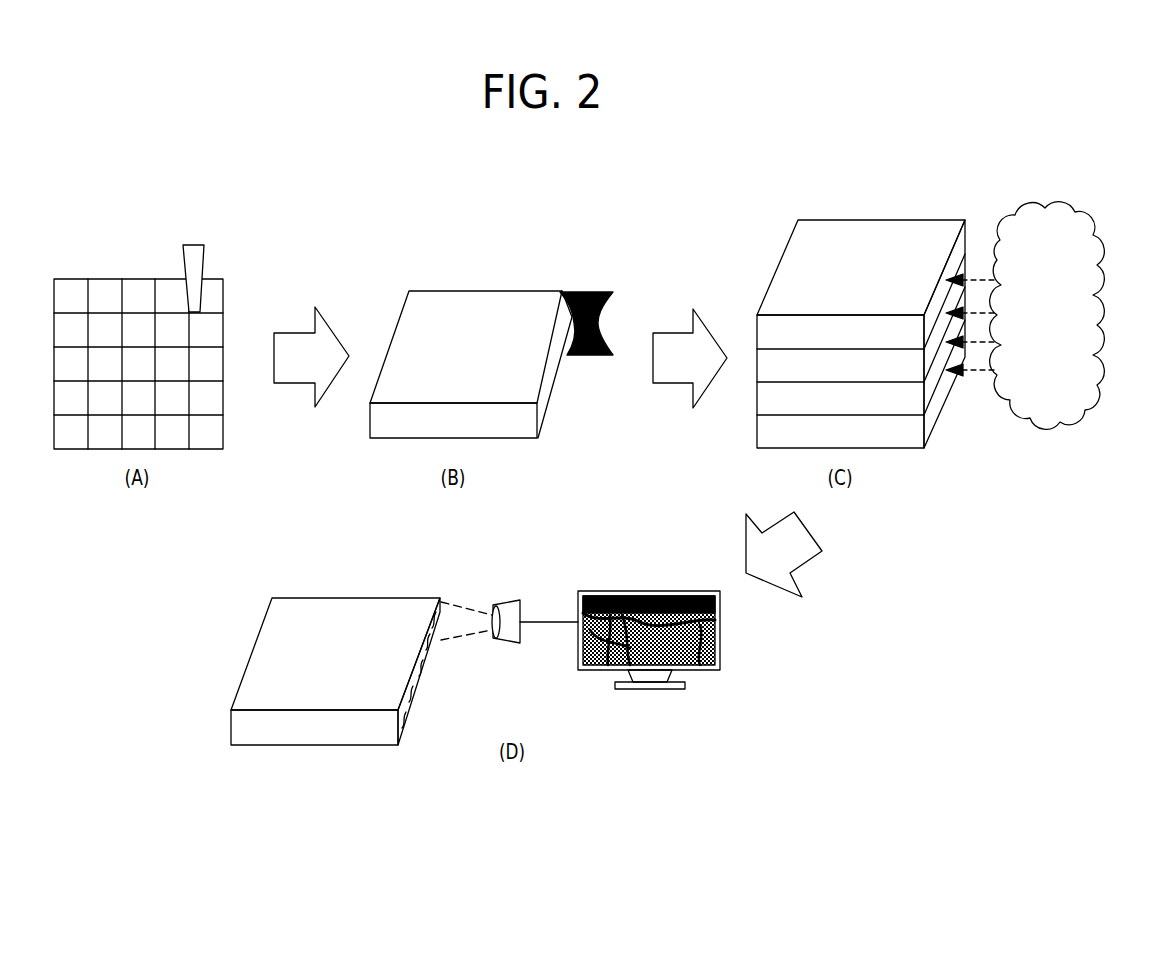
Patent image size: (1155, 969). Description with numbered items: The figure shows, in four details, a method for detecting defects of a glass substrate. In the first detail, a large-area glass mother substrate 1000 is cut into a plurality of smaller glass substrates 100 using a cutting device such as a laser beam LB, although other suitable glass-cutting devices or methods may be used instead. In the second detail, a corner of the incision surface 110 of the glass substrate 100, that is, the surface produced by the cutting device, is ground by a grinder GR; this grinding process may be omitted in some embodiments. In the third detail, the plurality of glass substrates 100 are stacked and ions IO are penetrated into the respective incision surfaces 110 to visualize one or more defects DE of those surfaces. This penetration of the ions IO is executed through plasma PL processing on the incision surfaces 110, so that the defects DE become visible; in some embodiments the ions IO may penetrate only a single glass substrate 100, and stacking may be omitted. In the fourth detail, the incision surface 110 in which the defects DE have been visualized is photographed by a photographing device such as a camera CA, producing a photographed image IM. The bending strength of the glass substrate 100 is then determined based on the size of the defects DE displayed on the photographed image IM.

The glass mother substrate 1000 is at (129, 255).
The glass substrate 100 is at (217, 290).
The incision surface 110 is at (549, 391).
The laser beam LB is at (204, 251).
The grinder GR is at (599, 292).
The plasma PL is at (1083, 287).
The ions IO is at (978, 374).
The camera CA is at (505, 605).
The photographed image IM is at (721, 657).
The defects DE is at (421, 694).